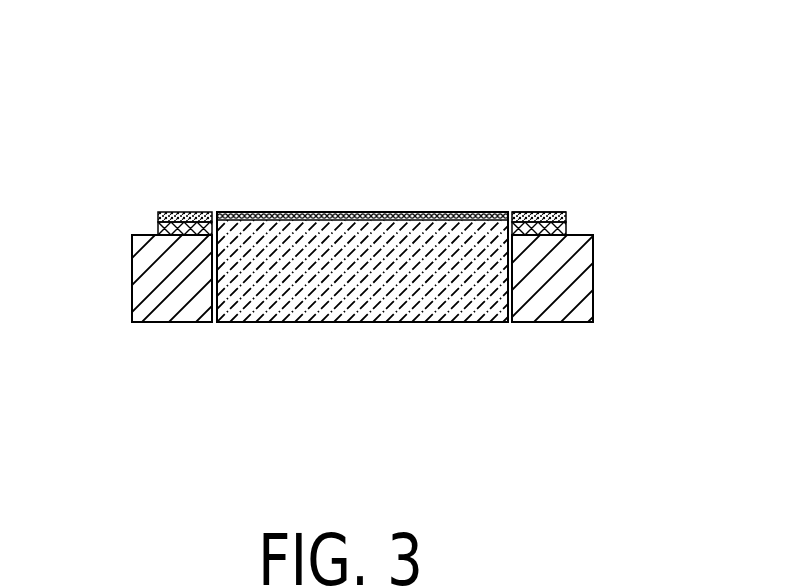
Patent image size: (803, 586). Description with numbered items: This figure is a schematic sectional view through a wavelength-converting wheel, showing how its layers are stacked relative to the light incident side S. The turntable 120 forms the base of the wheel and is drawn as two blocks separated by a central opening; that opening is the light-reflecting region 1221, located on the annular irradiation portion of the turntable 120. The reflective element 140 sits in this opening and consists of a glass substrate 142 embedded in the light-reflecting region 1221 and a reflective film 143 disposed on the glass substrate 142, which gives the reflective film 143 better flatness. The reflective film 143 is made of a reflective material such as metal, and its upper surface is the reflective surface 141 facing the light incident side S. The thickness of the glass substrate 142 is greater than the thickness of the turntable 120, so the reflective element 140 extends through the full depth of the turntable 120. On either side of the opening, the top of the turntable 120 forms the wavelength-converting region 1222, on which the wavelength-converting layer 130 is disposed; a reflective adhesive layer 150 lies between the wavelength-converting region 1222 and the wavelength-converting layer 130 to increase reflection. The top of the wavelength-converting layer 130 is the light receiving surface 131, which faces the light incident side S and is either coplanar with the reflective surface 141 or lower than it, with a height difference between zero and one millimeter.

The light incident side S is at (176, 152).
The turntable 120 is at (148, 282).
The light-reflecting region 1221 is at (510, 293).
The wavelength-converting region 1222 is at (177, 238).
The wavelength-converting layer 130 is at (552, 212).
The light receiving surface 131 is at (522, 210).
The reflective element 140 is at (362, 162).
The reflective surface 141 is at (260, 211).
The glass substrate 142 is at (311, 212).
The reflective film 143 is at (405, 212).
The reflective adhesive layer 150 is at (567, 233).